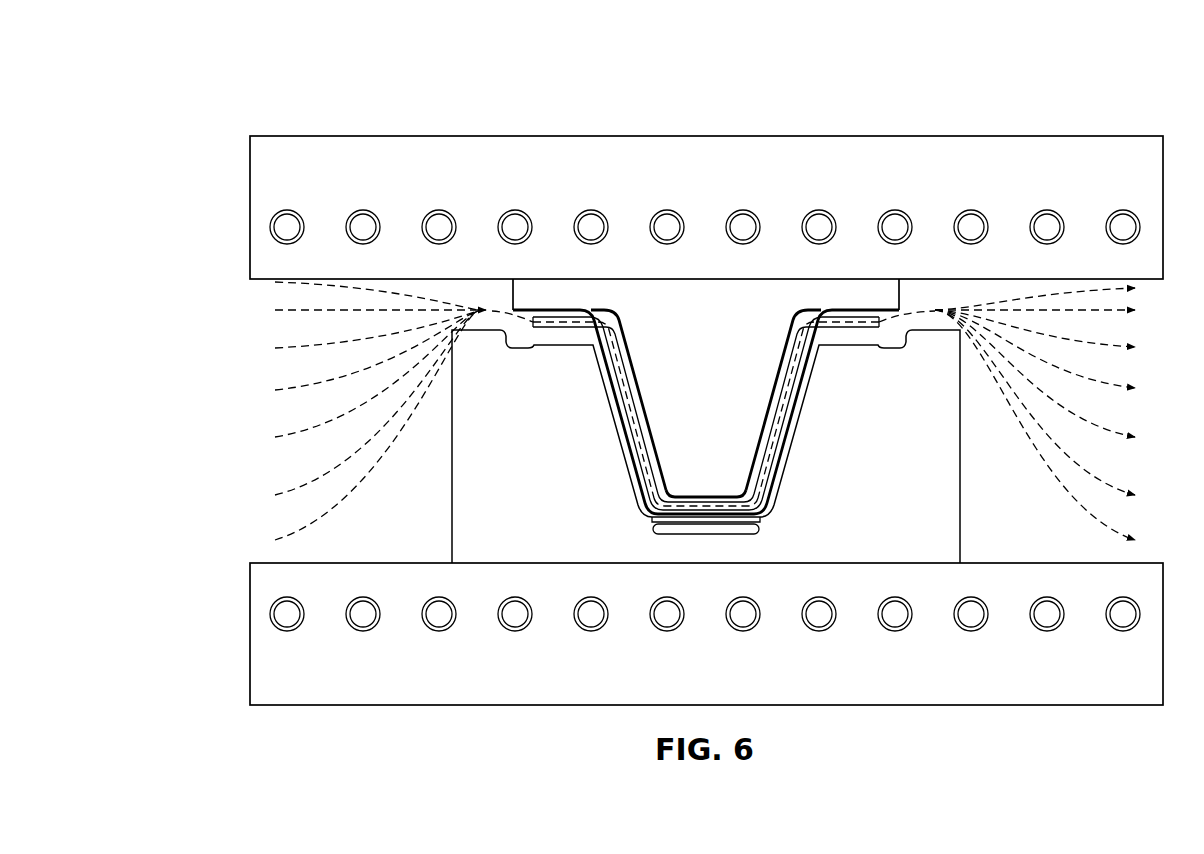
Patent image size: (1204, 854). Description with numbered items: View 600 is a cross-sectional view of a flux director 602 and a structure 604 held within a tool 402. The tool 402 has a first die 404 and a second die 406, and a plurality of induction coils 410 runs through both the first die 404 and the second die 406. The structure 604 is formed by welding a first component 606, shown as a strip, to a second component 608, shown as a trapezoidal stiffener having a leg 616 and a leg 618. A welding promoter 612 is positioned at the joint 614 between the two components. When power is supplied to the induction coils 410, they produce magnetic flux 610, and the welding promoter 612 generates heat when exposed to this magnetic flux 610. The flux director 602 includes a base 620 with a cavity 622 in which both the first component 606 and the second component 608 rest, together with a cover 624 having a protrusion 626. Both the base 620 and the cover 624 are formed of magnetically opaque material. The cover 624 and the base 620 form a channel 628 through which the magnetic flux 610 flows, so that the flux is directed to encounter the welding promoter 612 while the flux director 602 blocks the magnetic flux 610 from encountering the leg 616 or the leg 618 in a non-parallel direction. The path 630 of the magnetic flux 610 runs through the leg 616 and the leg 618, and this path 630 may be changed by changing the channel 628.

The view 600 is at (219, 84).
The tool 402 is at (1094, 104).
The first die 404 is at (245, 206).
The second die 406 is at (245, 636).
The plurality of induction coils 410 is at (430, 212).
The flux director 602 is at (973, 530).
The structure 604 is at (593, 343).
The first component 606 is at (650, 528).
The second component 608 is at (688, 495).
The magnetic flux 610 is at (236, 483).
The welding promoter 612 is at (761, 519).
The joint 614 is at (640, 509).
The leg 616 is at (640, 410).
The leg 618 is at (760, 440).
The base 620 is at (447, 532).
The cavity 622 is at (668, 350).
The cover 624 is at (967, 289).
The protrusion 626 is at (766, 302).
The channel 628 is at (496, 300).
The path 630 is at (924, 318).